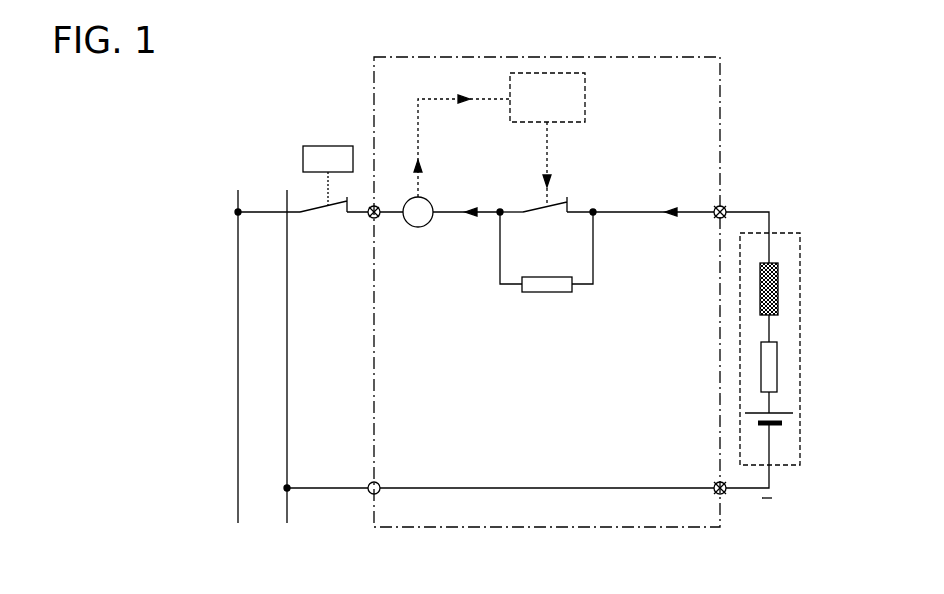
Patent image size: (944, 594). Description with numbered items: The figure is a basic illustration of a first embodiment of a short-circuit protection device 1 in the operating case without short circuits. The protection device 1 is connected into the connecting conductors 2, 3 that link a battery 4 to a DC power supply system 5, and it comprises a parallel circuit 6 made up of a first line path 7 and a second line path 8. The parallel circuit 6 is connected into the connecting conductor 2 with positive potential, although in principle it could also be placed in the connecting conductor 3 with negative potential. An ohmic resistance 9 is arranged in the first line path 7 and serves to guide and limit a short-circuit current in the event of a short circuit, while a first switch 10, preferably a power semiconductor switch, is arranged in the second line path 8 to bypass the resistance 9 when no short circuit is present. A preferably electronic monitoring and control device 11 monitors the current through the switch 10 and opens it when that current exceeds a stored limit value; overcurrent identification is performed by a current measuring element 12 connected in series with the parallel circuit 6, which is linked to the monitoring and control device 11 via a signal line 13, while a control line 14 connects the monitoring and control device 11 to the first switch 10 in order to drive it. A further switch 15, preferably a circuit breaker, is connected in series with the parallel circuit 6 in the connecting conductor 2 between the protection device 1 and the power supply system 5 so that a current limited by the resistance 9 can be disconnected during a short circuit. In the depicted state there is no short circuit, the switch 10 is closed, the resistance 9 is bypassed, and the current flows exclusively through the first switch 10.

The short-circuit protection device 1 is at (720, 95).
The connecting conductor 2 is at (729, 207).
The connecting conductor 3 is at (733, 493).
The battery 4 is at (800, 317).
The DC power supply system 5 is at (252, 155).
The parallel circuit 6 is at (610, 233).
The first line path 7 is at (594, 270).
The second line path 8 is at (575, 217).
The ohmic resistance 9 is at (545, 293).
The first switch 10 is at (538, 208).
The monitoring and control device 11 is at (585, 104).
The current measuring element 12 is at (418, 228).
The signal line 13 is at (418, 133).
The control line 14 is at (548, 148).
The switch 15 is at (335, 146).